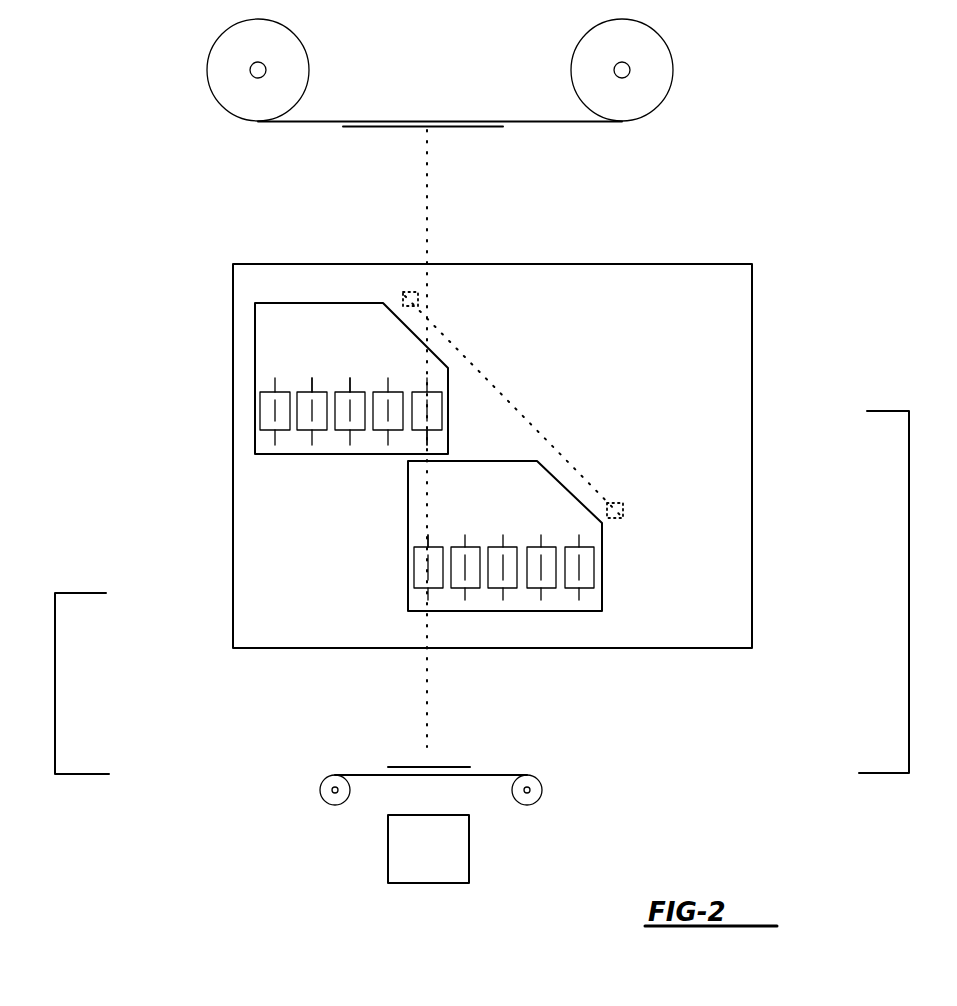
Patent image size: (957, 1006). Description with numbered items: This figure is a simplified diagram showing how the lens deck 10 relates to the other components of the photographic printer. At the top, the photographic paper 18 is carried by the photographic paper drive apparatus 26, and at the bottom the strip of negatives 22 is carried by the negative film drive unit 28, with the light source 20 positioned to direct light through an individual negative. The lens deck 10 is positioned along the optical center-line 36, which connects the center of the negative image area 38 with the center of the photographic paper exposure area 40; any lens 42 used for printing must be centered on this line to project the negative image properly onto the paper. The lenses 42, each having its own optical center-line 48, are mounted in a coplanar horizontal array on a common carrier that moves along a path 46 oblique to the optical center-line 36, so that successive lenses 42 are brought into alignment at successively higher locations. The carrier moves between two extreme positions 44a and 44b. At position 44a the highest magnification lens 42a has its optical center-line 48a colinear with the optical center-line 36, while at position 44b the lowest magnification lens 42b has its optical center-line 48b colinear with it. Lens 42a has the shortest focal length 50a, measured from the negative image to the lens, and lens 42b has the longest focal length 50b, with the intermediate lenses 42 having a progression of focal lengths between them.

The lens deck 10 is at (233, 394).
The photographic paper 18 is at (323, 122).
The light source 20 is at (465, 862).
The strip of negatives 22 is at (354, 775).
The photographic paper drive apparatus 26 is at (250, 66).
The negative film drive unit 28 is at (333, 791).
The optical center-line 36 is at (427, 196).
The negative image area 38 is at (410, 767).
The photographic paper exposure area 40 is at (478, 127).
The lenses 42 is at (380, 420).
The highest magnification lens 42a is at (414, 578).
The lowest magnification lens 42b is at (423, 390).
The first extreme carrier position 44a is at (453, 597).
The second extreme carrier position 44b is at (257, 334).
The oblique path 46 is at (518, 411).
The lens optical center-line 48 is at (350, 388).
The optical center-line of lens 42a 48a is at (428, 540).
The optical center-line of lens 42b 48b is at (428, 440).
The shortest focal length 50a is at (55, 675).
The longest focal length 50b is at (909, 654).